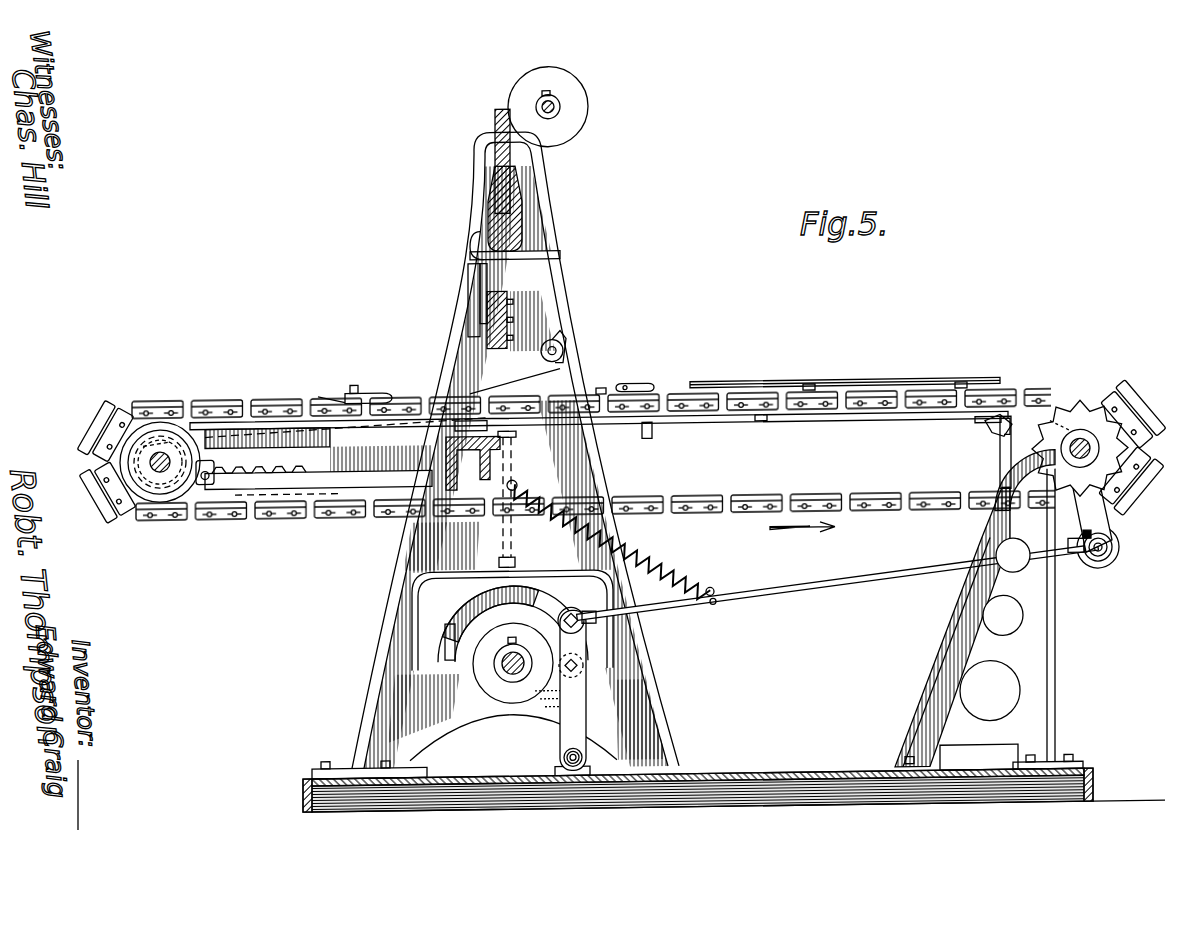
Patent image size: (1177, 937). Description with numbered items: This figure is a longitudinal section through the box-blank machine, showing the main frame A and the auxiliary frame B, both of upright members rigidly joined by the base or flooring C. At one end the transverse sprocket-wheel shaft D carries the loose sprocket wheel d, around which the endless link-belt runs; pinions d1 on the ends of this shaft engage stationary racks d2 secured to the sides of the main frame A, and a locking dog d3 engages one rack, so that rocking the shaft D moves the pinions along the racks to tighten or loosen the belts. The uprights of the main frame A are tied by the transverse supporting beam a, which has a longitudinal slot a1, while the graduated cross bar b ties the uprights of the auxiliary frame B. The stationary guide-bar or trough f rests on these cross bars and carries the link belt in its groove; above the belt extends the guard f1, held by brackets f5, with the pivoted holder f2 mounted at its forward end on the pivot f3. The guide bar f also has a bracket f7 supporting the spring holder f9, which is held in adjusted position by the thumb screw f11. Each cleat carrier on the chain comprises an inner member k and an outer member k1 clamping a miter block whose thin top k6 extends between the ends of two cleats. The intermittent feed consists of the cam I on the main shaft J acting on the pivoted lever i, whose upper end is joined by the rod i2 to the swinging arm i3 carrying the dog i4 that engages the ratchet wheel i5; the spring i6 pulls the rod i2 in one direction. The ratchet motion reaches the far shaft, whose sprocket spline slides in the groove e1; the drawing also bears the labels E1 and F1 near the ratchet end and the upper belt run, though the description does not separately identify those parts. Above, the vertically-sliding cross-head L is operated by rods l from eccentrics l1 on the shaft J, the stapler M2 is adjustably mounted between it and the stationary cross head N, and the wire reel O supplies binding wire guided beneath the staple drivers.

The main frame A is at (558, 235).
The auxiliary frame B is at (1043, 699).
The base C is at (771, 778).
The sprocket-wheel shaft D is at (156, 460).
The sprocket wheel d is at (160, 430).
The pinion d1 is at (148, 400).
The stationary rack d2 is at (258, 492).
The locking dog d3 is at (208, 470).
The bracket E1 is at (1000, 452).
The longitudinal groove e1 is at (1080, 450).
The guide rail F1 is at (857, 384).
The guide-bar f is at (810, 387).
The guard f1 is at (760, 419).
The pivoted holder f2 is at (598, 388).
The pivot of holder f3 is at (636, 384).
The bracket f5 is at (960, 387).
The bracket f7 is at (330, 396).
The spring holder f9 is at (377, 390).
The thumb screw f11 is at (348, 390).
The cam I is at (545, 648).
The pivoted lever i is at (578, 712).
The link or rod i2 is at (900, 586).
The swinging arm i3 is at (1078, 565).
The dog i4 is at (551, 703).
The ratchet wheel i5 is at (1065, 424).
The spring i6 is at (678, 570).
The main shaft J is at (509, 676).
The inner member k is at (748, 395).
The outer member k1 is at (773, 400).
The thin top of miter block k6 is at (118, 422).
The cross-head L is at (508, 213).
The rod l is at (516, 553).
The eccentric l1 is at (470, 610).
The stapler M2 is at (467, 333).
The stationary cross head N is at (503, 305).
The wire reel O is at (573, 99).
The transverse supporting beam a is at (446, 466).
The longitudinal slot a1 is at (500, 440).
The graduated cross bar b is at (985, 428).